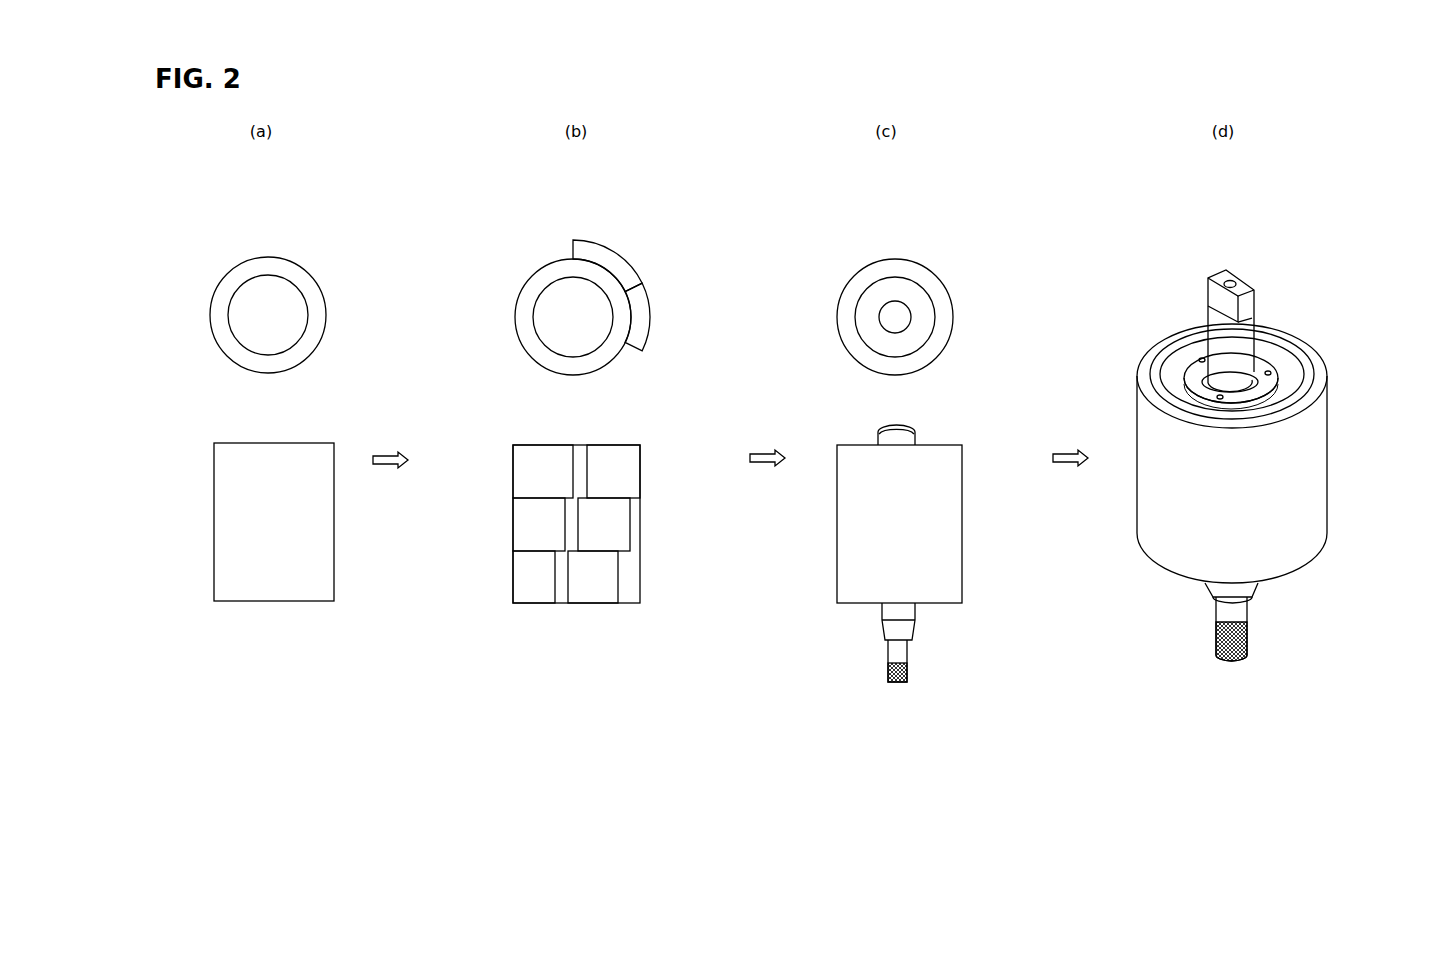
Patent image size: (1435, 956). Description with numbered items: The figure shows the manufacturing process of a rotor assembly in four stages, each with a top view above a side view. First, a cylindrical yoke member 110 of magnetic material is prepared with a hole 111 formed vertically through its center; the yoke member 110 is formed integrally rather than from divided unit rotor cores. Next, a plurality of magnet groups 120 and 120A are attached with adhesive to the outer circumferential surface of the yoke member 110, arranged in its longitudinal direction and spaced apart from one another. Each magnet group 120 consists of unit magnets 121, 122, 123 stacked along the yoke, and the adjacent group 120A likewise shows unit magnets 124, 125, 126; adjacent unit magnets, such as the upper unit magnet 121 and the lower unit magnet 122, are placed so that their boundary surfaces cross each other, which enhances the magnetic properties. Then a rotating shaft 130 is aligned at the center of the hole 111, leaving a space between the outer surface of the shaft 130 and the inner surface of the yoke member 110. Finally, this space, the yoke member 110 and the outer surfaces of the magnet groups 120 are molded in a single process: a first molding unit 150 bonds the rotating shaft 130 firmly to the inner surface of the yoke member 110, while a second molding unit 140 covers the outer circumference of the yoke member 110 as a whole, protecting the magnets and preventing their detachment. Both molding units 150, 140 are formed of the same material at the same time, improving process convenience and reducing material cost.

The yoke member 110 is at (213, 302).
The hole 111 is at (250, 320).
The magnet group 120 is at (610, 262).
The magnet group 120A is at (460, 463).
The unit magnet 121 is at (620, 472).
The unit magnet 122 is at (613, 521).
The unit magnet 123 is at (606, 571).
The fourth magnet 124 is at (536, 471).
The fifth magnet 125 is at (538, 521).
The sixth magnet 126 is at (530, 572).
The rotating shaft 130 is at (895, 308).
The second molding unit 140 is at (1322, 470).
The first molding unit 150 is at (1266, 378).